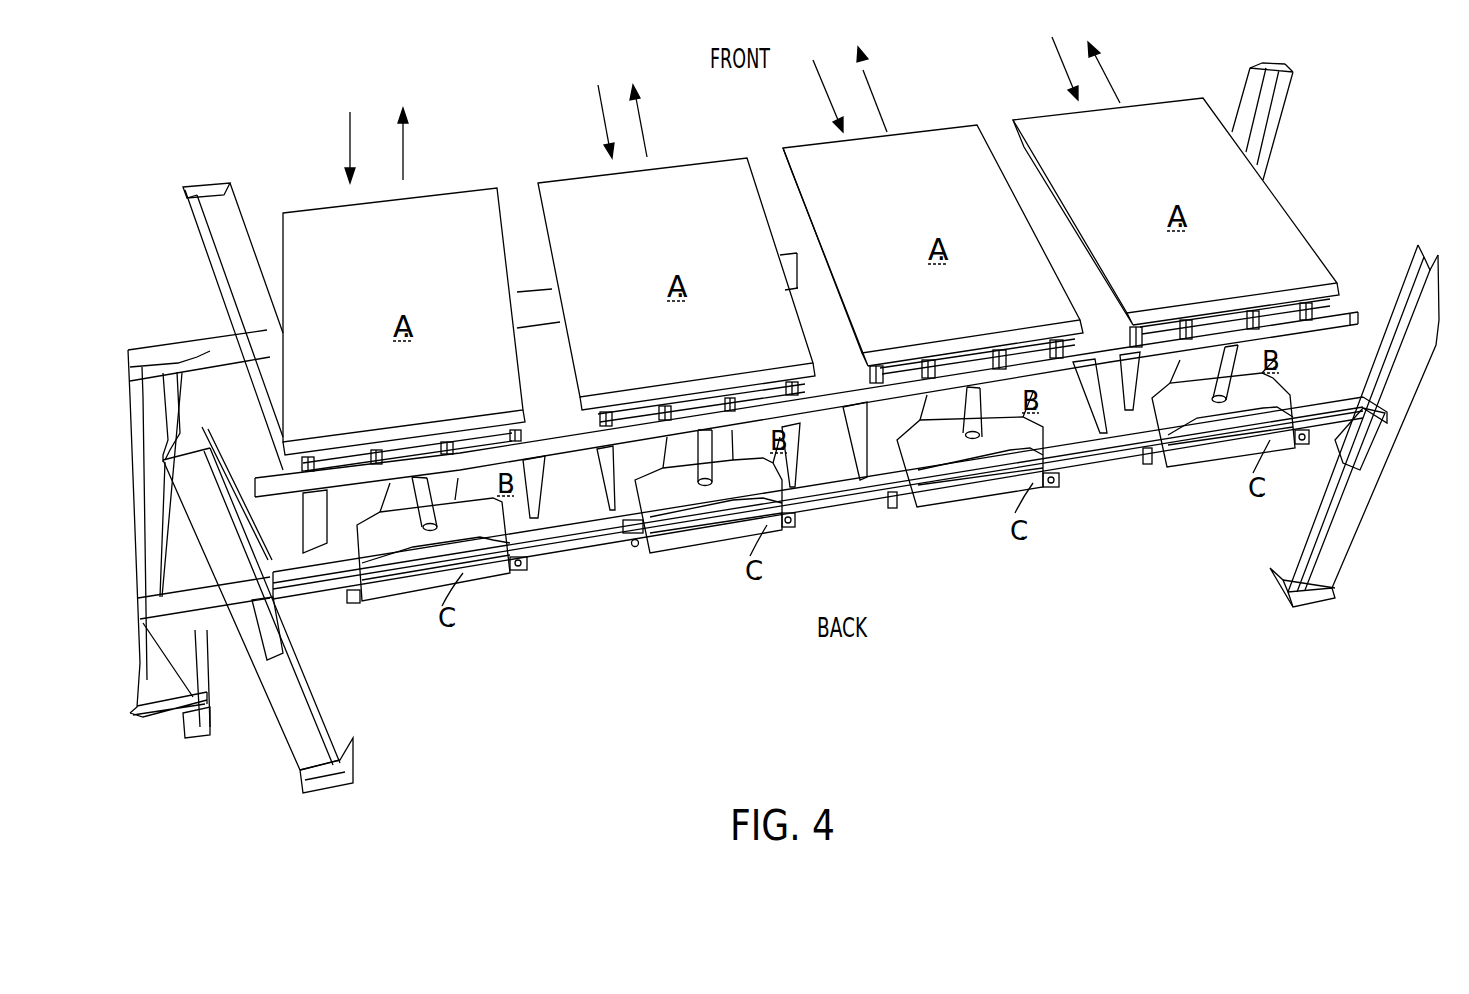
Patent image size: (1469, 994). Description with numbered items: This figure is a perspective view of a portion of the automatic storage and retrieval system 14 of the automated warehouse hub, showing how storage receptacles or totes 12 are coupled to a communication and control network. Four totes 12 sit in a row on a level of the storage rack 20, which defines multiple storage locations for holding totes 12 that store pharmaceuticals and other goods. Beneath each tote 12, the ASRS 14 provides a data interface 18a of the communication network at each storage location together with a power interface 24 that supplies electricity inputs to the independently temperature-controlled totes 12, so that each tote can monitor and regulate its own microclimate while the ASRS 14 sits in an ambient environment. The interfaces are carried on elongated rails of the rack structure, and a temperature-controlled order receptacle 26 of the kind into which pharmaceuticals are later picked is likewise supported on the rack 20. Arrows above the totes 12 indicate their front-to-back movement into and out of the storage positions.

The storage receptacle or tote 12 is at (455, 210).
The automatic storage and retrieval system 14 is at (1388, 582).
The data interface 18a is at (828, 504).
The power interface 24 is at (398, 592).
The storage rack 20 is at (1378, 448).
The temperature-controlled order receptacle 26 is at (540, 455).